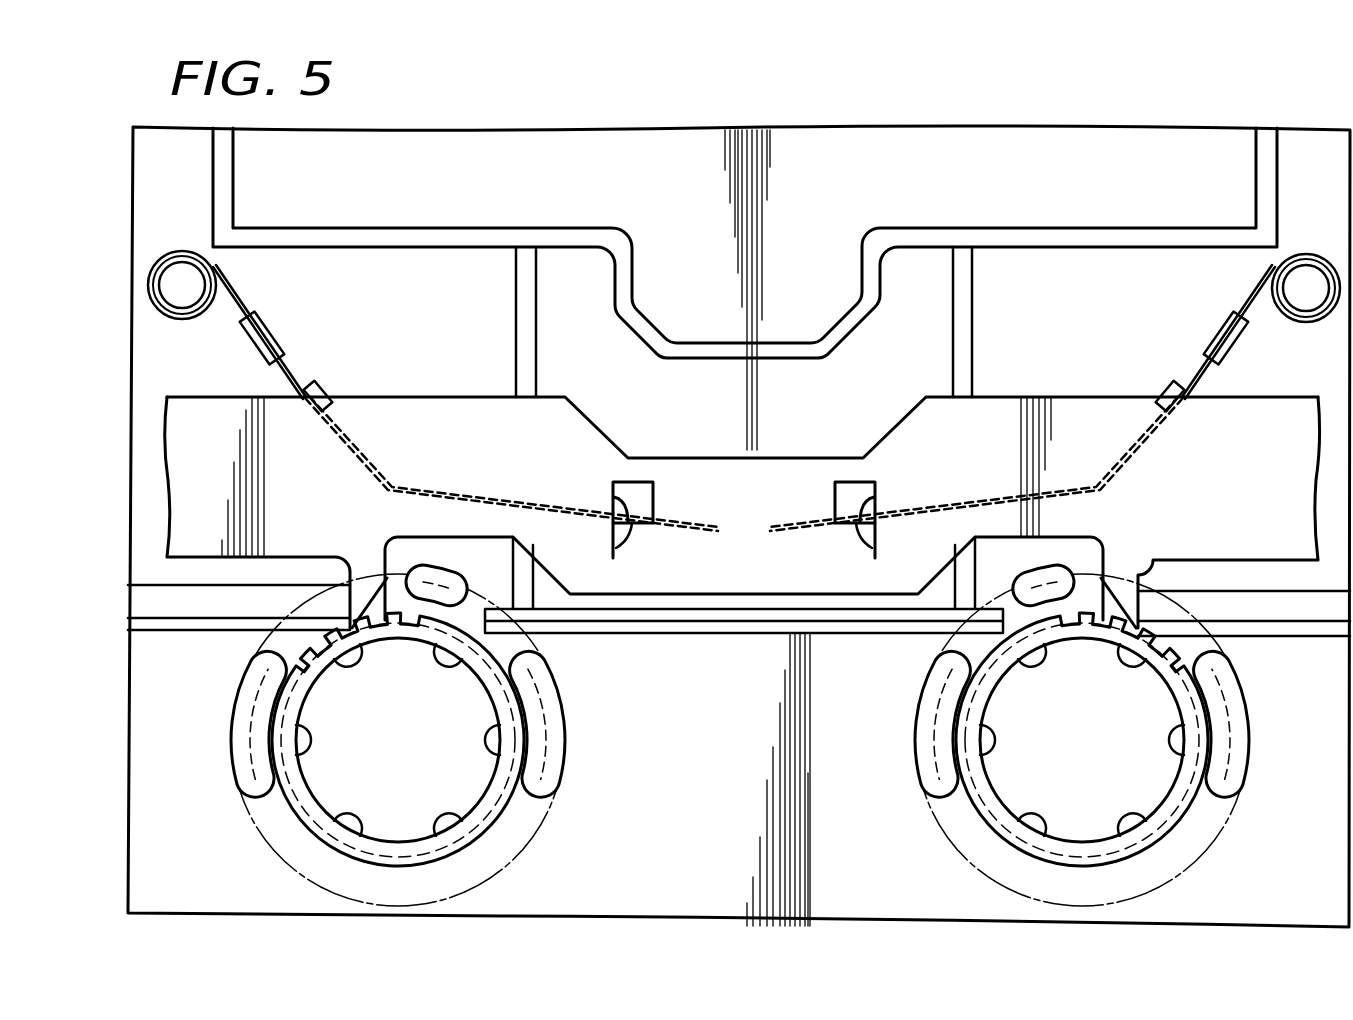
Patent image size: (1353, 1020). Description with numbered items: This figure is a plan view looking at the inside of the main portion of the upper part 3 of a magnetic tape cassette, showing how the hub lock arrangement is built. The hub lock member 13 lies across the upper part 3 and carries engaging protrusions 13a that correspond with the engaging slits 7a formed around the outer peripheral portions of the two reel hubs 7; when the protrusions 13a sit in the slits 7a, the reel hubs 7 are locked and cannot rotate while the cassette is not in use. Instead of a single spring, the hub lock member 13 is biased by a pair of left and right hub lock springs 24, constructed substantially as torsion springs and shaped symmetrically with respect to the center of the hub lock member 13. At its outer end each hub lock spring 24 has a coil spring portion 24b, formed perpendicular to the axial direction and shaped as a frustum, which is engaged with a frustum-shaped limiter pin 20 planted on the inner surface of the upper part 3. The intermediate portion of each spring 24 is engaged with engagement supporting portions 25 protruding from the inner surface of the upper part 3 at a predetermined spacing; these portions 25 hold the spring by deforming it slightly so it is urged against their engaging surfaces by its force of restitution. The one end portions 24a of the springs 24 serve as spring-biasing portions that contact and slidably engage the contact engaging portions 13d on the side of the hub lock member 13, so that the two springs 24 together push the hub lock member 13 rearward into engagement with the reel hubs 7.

The upper part 3 is at (1157, 143).
The reel hubs 7 is at (565, 795).
The engaging slits 7a is at (333, 660).
The hub lock member 13 is at (787, 470).
The engaging protrusions 13a is at (340, 612).
The contact engaging portions 13d is at (625, 530).
The limiter pins 20 is at (182, 272).
The hub lock springs 24 is at (300, 377).
The one end portions 24a is at (615, 500).
The coil spring portions 24b is at (180, 320).
The engagement supporting portions 25 is at (253, 343).